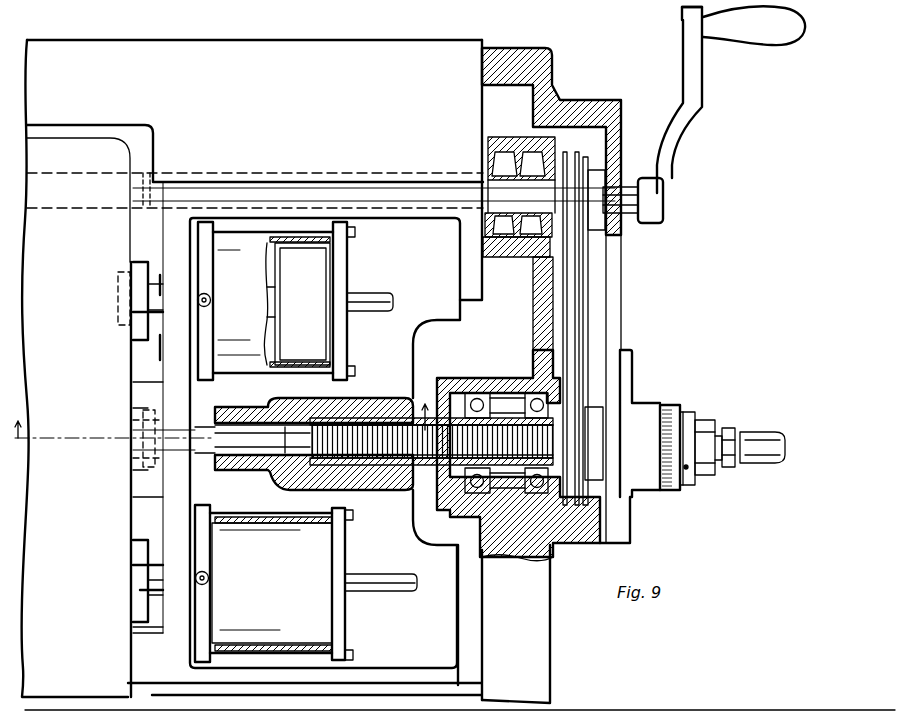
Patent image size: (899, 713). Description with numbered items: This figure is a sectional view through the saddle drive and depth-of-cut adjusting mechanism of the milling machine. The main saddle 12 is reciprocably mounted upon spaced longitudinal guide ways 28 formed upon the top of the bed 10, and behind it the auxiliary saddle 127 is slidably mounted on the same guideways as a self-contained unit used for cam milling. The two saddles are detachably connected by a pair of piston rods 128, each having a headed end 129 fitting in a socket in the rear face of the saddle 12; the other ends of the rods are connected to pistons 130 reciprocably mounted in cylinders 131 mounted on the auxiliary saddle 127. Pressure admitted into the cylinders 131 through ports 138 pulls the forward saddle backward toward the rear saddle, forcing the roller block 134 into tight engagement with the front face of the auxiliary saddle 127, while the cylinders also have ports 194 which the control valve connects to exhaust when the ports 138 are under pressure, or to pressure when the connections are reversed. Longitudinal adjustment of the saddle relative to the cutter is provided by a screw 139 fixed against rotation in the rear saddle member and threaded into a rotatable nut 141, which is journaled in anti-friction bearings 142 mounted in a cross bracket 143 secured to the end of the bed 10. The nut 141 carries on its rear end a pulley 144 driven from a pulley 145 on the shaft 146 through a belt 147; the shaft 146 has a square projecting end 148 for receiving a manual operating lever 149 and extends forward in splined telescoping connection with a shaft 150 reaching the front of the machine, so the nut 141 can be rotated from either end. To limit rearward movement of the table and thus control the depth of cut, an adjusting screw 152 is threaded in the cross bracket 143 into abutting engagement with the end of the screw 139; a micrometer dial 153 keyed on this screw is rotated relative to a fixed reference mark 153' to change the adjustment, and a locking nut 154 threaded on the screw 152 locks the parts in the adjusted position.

The bed 10 is at (222, 411).
The saddle 12 is at (93, 152).
The guide ways 28 is at (473, 285).
The auxiliary saddle 127 is at (453, 313).
The piston rods 128 is at (160, 240).
The headed end 129 is at (125, 294).
The pistons 130 is at (313, 263).
The cylinders 131 is at (253, 253).
The roller block 134 is at (145, 390).
The ports 138 is at (210, 300).
The screw 139 is at (295, 435).
The rotatable nut 141 is at (425, 480).
The anti-friction bearings 142 is at (493, 372).
The cross bracket 143 is at (542, 609).
The pulley 144 is at (588, 492).
The pulley 145 is at (590, 162).
The shaft 146 is at (620, 194).
The belt 147 is at (583, 283).
The square projecting end 148 is at (664, 194).
The manual operating lever 149 is at (690, 113).
The shaft 150 is at (50, 182).
The adjusting screw 152 is at (715, 437).
The micrometer dial 153 is at (688, 436).
The fixed reference mark 153' is at (653, 446).
The locking nut 154 is at (700, 425).
The ports 194 is at (349, 312).